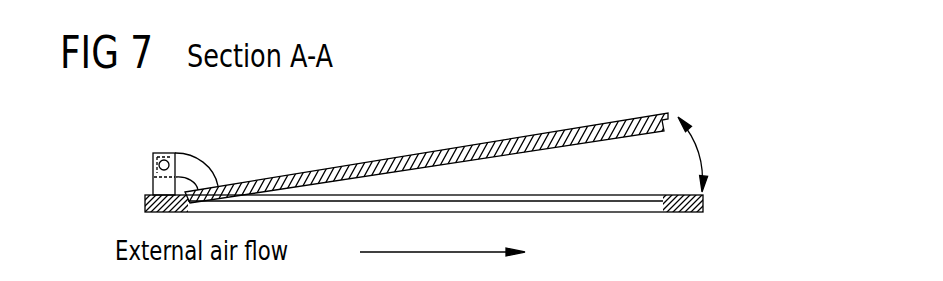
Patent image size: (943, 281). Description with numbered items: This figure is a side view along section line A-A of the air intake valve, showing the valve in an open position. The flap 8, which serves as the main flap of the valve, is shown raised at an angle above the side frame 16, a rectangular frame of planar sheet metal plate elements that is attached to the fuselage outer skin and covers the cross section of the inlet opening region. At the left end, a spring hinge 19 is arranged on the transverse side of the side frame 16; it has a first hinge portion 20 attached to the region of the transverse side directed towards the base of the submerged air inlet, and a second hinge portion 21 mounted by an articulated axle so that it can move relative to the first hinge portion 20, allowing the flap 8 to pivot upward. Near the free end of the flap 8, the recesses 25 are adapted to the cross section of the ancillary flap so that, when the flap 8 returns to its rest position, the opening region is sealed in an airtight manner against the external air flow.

The flap 8 is at (487, 143).
The side frame 16 is at (703, 207).
The spring hinge 19 is at (142, 159).
The first hinge portion 20 is at (153, 183).
The second hinge portion 21 is at (198, 170).
The recesses 25 is at (665, 131).